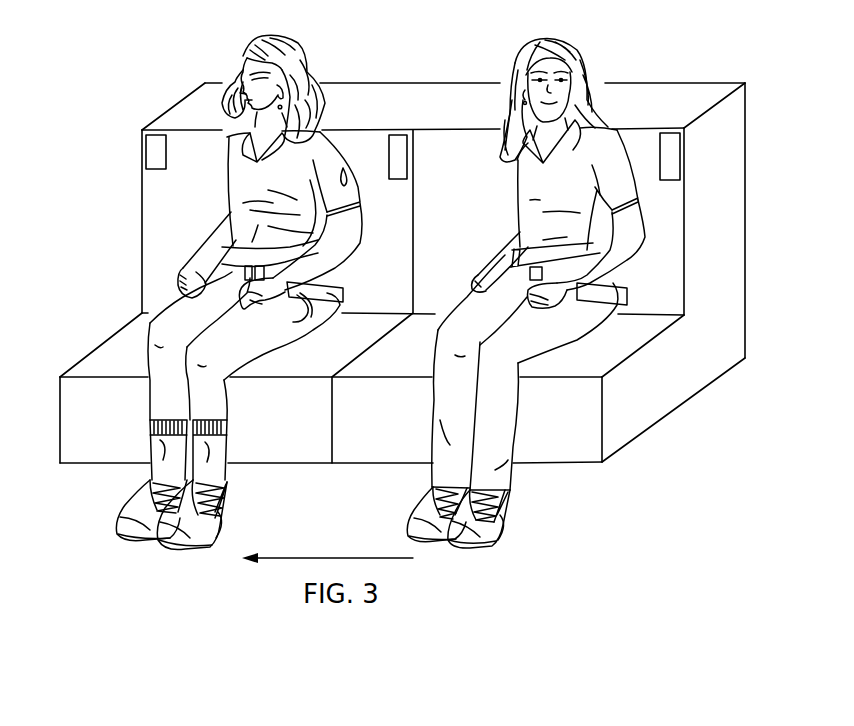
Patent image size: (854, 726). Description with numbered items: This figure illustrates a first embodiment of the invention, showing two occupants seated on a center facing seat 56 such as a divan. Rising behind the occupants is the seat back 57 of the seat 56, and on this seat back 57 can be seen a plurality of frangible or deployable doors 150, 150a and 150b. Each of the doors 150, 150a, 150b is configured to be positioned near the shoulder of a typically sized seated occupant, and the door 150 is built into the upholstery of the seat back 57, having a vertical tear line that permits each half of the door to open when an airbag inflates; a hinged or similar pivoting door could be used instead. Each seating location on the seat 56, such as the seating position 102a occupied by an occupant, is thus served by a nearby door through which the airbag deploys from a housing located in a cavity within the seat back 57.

The center facing seat 56 is at (655, 385).
The seat back 57 is at (372, 148).
The seating position 102a is at (318, 130).
The frangible or deployable door 150 is at (148, 152).
The frangible or deployable door 150a is at (402, 165).
The frangible or deployable door 150b is at (672, 142).